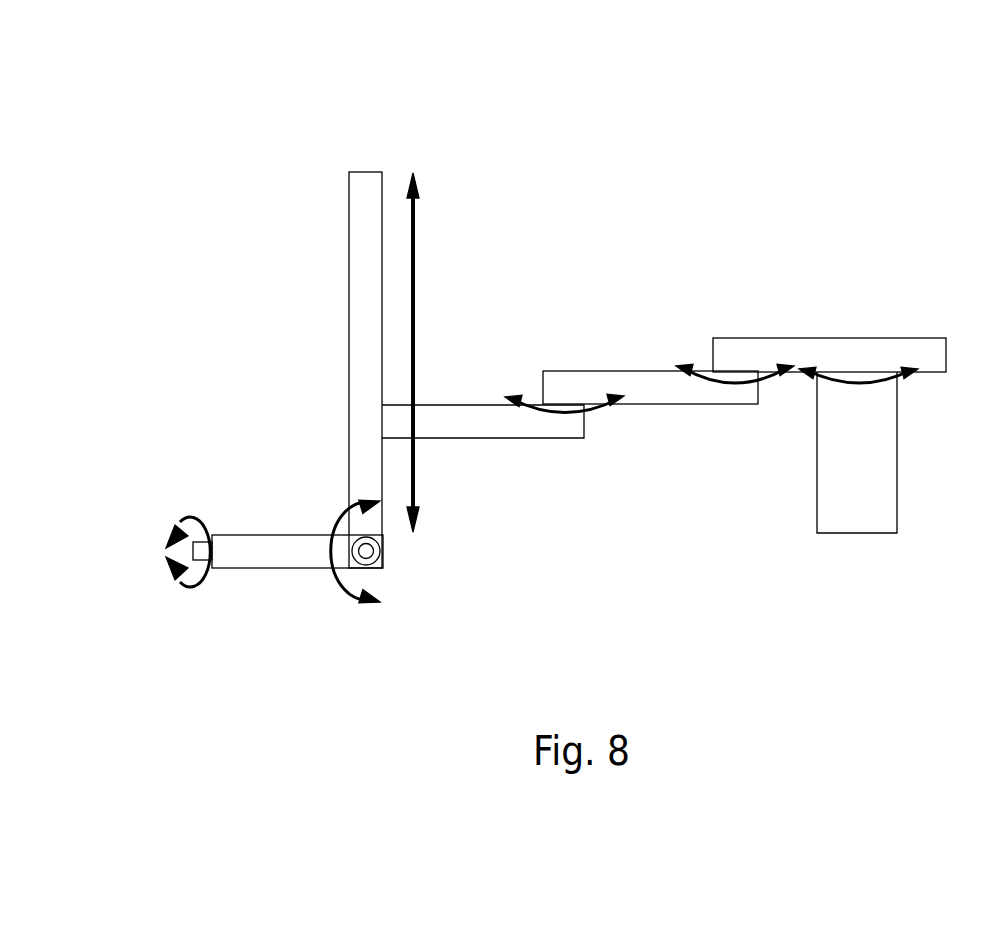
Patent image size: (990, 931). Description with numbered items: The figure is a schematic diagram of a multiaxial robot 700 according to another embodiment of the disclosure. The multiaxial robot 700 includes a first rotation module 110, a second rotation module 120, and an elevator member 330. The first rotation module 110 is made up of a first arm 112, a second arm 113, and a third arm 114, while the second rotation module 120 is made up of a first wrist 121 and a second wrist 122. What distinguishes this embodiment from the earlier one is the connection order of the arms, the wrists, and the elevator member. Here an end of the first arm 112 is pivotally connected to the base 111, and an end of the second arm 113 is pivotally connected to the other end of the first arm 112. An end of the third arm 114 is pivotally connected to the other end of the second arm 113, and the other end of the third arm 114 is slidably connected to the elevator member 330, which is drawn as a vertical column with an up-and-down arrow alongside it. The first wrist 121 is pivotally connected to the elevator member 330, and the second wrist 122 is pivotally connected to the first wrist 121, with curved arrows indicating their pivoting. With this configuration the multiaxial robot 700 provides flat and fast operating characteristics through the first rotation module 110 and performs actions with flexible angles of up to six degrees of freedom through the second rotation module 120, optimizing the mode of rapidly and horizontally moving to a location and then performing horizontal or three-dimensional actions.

The multiaxial robot 700 is at (172, 73).
The elevator member 330 is at (365, 222).
The second rotation module 120 is at (262, 484).
The first wrist 121 is at (225, 547).
The second wrist 122 is at (180, 505).
The first rotation module 110 is at (664, 486).
The base 111 is at (837, 475).
The first arm 112 is at (730, 360).
The second arm 113 is at (653, 383).
The third arm 114 is at (562, 423).